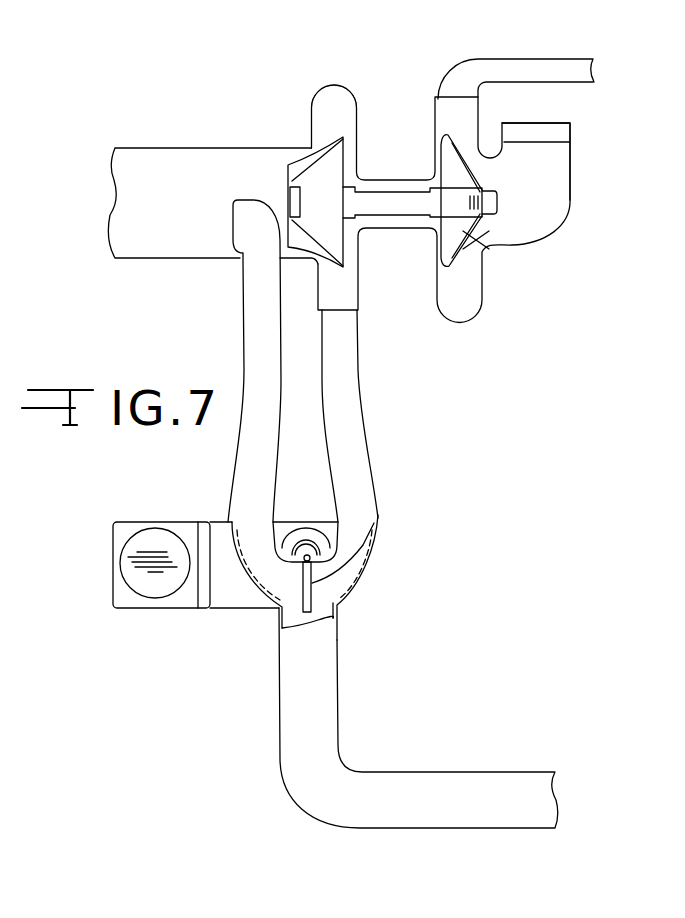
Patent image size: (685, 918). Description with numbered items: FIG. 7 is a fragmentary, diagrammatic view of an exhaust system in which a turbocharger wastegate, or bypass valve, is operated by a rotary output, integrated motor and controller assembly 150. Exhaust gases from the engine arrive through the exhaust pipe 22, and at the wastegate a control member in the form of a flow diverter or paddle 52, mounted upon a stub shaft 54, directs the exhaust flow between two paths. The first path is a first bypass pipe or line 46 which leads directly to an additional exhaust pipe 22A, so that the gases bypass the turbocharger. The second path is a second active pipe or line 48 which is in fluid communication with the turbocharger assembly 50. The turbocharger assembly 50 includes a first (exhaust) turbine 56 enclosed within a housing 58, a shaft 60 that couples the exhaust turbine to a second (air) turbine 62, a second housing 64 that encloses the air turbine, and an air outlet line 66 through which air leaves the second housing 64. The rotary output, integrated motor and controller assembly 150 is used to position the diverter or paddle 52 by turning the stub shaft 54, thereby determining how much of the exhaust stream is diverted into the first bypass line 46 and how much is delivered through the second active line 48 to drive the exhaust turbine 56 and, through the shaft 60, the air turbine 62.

The additional exhaust pipe 22A is at (152, 163).
The turbocharger assembly 50 is at (373, 108).
The housing 58 is at (328, 96).
The first (exhaust) turbine 56 is at (328, 172).
The shaft 60 is at (402, 220).
The second (air) turbine 62 is at (468, 232).
The second housing 64 is at (572, 171).
The air outlet line 66 is at (565, 54).
The first bypass pipe or line 46 is at (242, 464).
The second active pipe or line 48 is at (343, 387).
The stub shaft 54 is at (305, 522).
The flow diverter or paddle 52 is at (378, 515).
The rotary output, integrated motor and controller assembly 150 is at (217, 625).
The exhaust pipe 22 is at (490, 828).